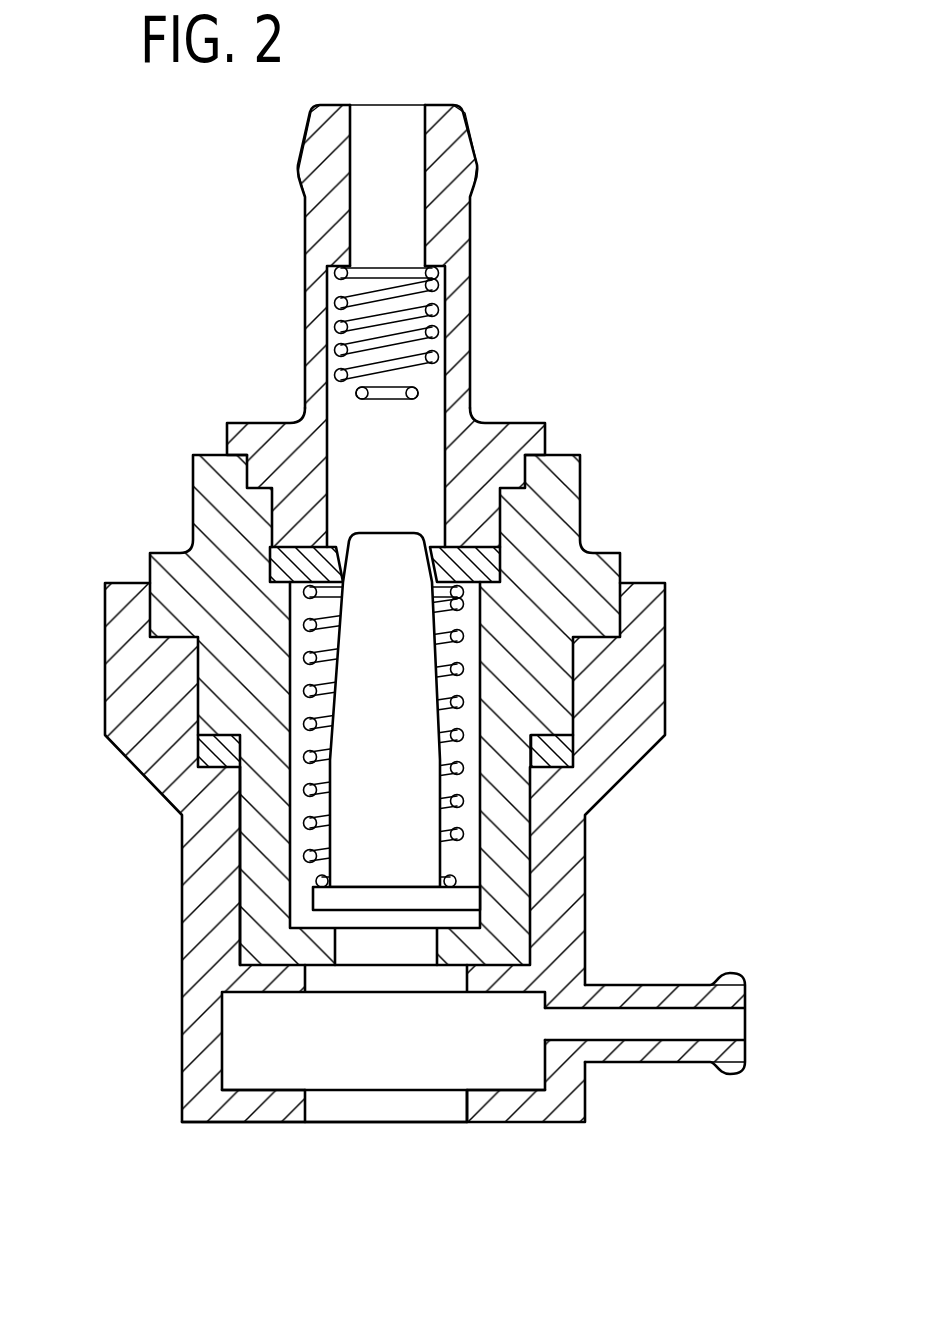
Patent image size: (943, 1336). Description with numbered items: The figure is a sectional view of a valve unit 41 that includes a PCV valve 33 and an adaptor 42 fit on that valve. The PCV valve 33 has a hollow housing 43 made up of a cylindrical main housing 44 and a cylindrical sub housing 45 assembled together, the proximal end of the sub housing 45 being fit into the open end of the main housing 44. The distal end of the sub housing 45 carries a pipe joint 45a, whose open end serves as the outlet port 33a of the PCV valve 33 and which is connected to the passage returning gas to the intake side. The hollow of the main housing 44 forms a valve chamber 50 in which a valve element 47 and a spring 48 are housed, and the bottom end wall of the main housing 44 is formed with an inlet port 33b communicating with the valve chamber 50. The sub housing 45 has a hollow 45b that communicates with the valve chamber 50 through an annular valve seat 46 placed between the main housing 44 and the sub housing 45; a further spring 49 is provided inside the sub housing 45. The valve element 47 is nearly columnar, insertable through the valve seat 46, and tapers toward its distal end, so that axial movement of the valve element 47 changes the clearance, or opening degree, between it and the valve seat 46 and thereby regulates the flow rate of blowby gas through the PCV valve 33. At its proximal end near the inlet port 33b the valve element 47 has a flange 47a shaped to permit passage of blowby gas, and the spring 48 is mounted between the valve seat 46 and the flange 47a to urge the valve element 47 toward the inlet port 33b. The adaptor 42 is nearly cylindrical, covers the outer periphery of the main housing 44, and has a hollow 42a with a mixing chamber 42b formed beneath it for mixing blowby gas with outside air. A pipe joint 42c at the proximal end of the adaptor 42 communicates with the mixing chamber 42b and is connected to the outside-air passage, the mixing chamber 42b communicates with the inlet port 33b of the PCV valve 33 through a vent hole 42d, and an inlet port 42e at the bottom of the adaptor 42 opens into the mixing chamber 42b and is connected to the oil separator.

The valve unit 41 is at (424, 616).
The PCV valve 33 is at (412, 616).
The outlet port 33a is at (426, 117).
The inlet port 33b is at (467, 988).
The adaptor 42 is at (440, 893).
The hollow 42a is at (240, 845).
The mixing chamber 42b is at (276, 1084).
The pipe joint 42c is at (723, 975).
The vent hole 42d is at (307, 998).
The inlet port 42e is at (467, 1100).
The housing 43 is at (357, 497).
The main housing 44 is at (357, 675).
The sub housing 45 is at (411, 288).
The pipe joint 45a is at (463, 154).
The hollow 45b is at (333, 438).
The valve seat 46 is at (487, 563).
The valve element 47 is at (529, 732).
The flange 47a is at (468, 898).
The spring 48 is at (464, 803).
The spring 49 is at (336, 304).
The valve chamber 50 is at (287, 690).